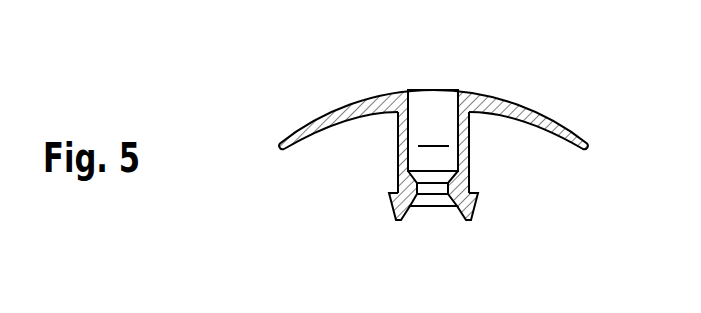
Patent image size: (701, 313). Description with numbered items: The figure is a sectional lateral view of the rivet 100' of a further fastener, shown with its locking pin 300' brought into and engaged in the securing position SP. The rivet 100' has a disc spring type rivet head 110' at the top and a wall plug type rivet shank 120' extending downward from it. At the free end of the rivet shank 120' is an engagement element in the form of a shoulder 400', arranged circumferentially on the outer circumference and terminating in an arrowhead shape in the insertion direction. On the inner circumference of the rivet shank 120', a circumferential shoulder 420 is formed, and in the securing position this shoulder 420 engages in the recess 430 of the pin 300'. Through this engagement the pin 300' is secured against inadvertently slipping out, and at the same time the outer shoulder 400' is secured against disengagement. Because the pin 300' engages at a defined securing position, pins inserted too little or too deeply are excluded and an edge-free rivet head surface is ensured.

The rivet 100' is at (411, 156).
The rivet head 110' is at (439, 99).
The rivet shank 120' is at (373, 157).
The locking pin 300' is at (433, 98).
The shoulder 400' is at (393, 226).
The shoulder 420 is at (452, 191).
The recess 430 is at (434, 190).